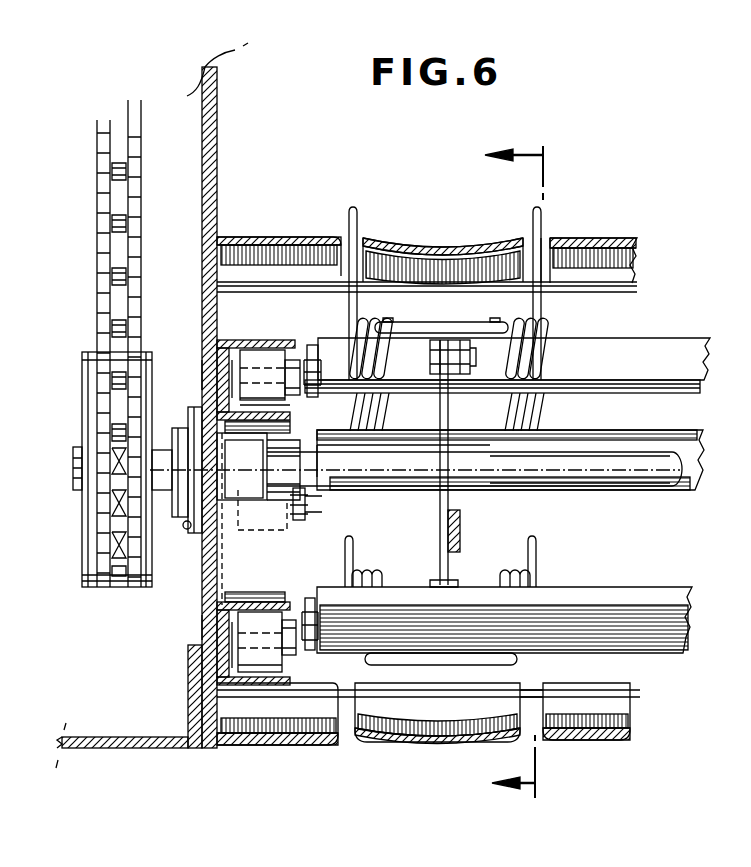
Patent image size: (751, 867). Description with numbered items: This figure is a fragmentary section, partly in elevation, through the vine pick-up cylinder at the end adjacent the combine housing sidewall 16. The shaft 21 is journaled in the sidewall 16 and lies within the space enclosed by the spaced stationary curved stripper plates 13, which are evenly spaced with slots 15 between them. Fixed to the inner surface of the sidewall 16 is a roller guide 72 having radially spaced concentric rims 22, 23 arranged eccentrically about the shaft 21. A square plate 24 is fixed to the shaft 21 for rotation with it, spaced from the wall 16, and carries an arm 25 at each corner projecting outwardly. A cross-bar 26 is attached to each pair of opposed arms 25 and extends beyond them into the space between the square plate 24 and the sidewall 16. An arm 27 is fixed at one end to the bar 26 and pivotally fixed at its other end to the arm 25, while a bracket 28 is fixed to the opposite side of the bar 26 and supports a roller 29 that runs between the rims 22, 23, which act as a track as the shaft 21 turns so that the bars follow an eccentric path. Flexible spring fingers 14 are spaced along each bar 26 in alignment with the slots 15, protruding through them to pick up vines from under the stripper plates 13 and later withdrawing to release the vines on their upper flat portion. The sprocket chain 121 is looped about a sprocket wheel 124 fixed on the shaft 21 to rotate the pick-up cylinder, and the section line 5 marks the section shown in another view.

The section line 5- 5 is at (524, 469).
The stripper plate 13 is at (443, 243).
The flexible spring finger 14 is at (358, 222).
The slot 15 is at (545, 258).
The sidewall 16 is at (221, 137).
The shaft 21 is at (641, 490).
The rim 22 is at (290, 416).
The rim 23 is at (246, 685).
The square plate 24 is at (461, 518).
The arm 25 is at (440, 407).
The cross-bar 26 is at (621, 357).
The arm 27 is at (448, 356).
The bracket 28 is at (313, 355).
The roller 29 is at (259, 362).
The roller guide 72 is at (216, 374).
The sprocket chain 121 is at (141, 215).
The sprocket wheel 124 is at (152, 352).